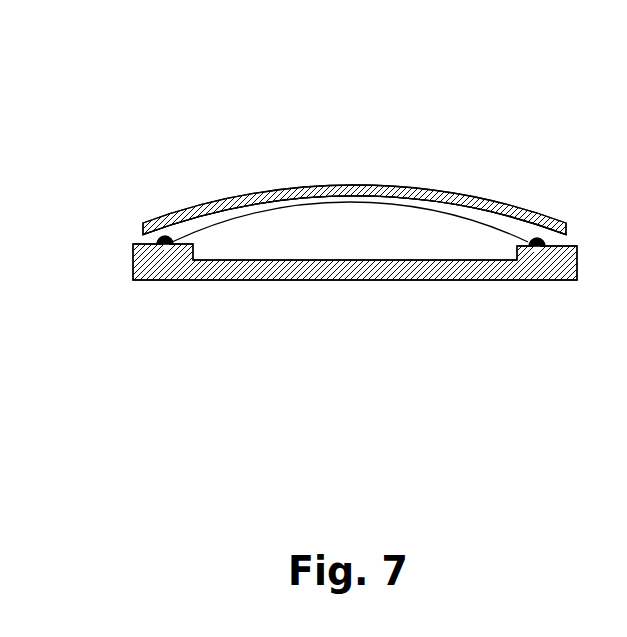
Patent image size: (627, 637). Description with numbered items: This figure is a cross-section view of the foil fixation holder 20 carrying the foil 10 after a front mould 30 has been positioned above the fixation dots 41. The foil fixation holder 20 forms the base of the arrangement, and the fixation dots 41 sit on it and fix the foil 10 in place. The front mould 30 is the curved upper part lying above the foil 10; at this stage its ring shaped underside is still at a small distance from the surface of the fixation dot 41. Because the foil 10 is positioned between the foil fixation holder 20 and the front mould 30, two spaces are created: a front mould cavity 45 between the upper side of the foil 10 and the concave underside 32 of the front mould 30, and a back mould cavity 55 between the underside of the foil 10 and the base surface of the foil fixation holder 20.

The foil 10 is at (448, 212).
The foil fixation holder 20 is at (553, 265).
The front mould 30 is at (530, 232).
The fixation dots 41 is at (170, 238).
The concave underside 32 is at (255, 208).
The front mould cavity 45 is at (352, 198).
The back mould cavity 55 is at (342, 242).